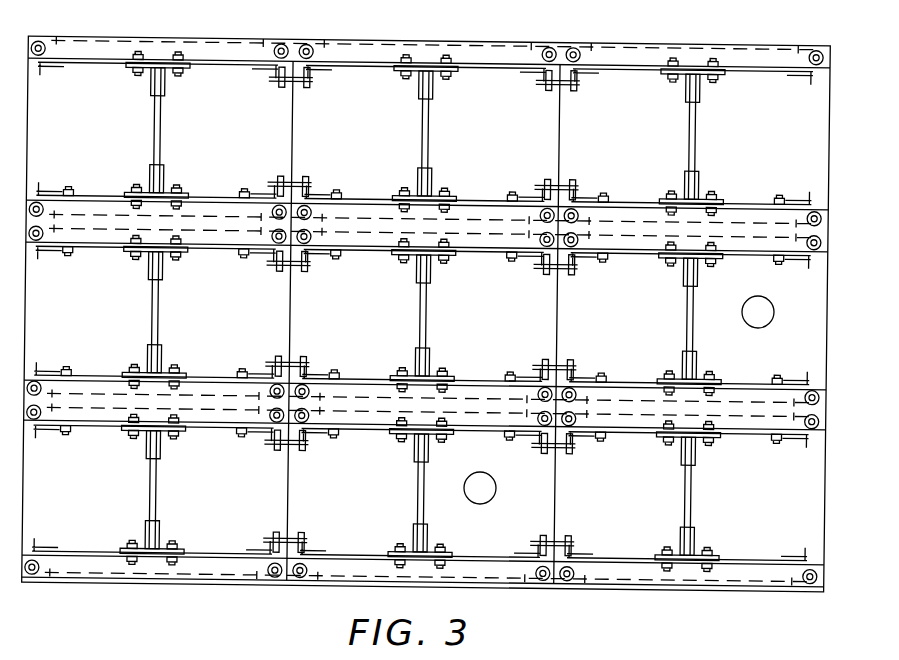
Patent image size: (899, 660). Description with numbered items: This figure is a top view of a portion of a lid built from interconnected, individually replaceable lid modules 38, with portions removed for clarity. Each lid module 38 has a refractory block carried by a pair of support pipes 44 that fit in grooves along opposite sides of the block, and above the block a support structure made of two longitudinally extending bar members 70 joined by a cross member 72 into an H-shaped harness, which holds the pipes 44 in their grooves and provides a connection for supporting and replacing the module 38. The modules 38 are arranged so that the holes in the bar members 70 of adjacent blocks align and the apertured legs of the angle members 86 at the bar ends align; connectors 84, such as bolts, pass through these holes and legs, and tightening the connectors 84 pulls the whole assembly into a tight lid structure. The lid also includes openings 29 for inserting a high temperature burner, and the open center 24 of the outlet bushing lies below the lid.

The open center 24 is at (750, 325).
The opening 29 is at (493, 499).
The lid module 38 is at (830, 136).
The support pipe 44 is at (568, 50).
The bar member 70 is at (617, 63).
The cross member 72 is at (697, 130).
The connector 84 is at (602, 373).
The angle member 86 is at (572, 88).